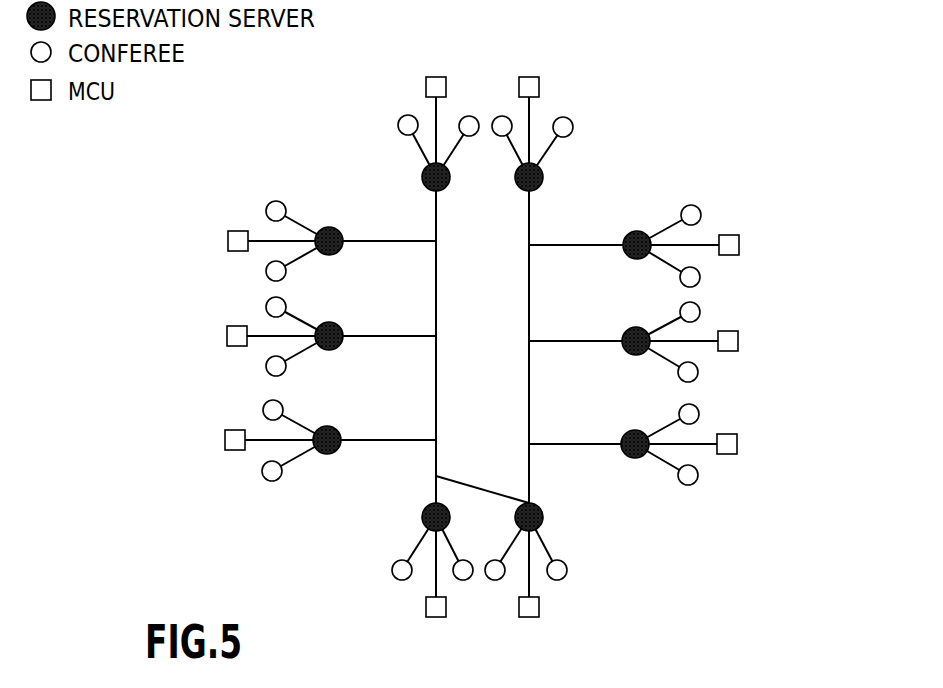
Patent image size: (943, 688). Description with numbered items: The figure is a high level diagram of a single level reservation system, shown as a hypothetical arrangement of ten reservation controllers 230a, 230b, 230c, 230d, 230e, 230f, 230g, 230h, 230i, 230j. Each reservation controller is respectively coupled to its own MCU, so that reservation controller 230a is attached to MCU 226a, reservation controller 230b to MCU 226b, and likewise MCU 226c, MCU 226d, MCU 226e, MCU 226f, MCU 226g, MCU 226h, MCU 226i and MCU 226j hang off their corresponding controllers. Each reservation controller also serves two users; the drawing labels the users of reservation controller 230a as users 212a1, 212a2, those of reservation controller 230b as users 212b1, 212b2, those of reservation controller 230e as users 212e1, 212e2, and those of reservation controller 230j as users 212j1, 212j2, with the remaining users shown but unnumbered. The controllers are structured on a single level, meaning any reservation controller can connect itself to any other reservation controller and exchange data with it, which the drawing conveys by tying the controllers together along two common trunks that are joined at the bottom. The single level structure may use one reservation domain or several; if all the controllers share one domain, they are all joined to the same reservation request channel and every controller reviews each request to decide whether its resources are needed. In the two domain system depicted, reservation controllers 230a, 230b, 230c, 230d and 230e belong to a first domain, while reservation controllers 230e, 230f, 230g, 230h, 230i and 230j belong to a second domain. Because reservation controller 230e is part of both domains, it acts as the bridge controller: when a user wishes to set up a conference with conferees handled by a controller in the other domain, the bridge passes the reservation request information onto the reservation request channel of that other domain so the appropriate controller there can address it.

The reservation controller 230a is at (543, 178).
The reservation controller 230b is at (626, 258).
The reservation controller 230c is at (625, 354).
The reservation controller 230d is at (624, 456).
The reservation controller 230e is at (542, 523).
The reservation controller 230f is at (422, 522).
The reservation controller 230g is at (335, 452).
The reservation controller 230h is at (337, 348).
The reservation controller 230i is at (338, 253).
The reservation controller 230j is at (423, 176).
The MCU 226a is at (539, 77).
The MCU 226b is at (739, 238).
The MCU 226c is at (738, 334).
The MCU 226d is at (737, 437).
The MCU 226e is at (524, 618).
The MCU 226f is at (430, 618).
The MCU 226g is at (226, 431).
The MCU 226h is at (228, 327).
The MCU 226i is at (230, 232).
The MCU 226j is at (430, 77).
The user 212a1 is at (497, 116).
The user 212a2 is at (571, 120).
The user 212b1 is at (699, 207).
The user 212b2 is at (700, 282).
The user 212e1 is at (565, 576).
The user 212e2 is at (492, 580).
The user 212j1 is at (399, 122).
The user 212j2 is at (471, 137).